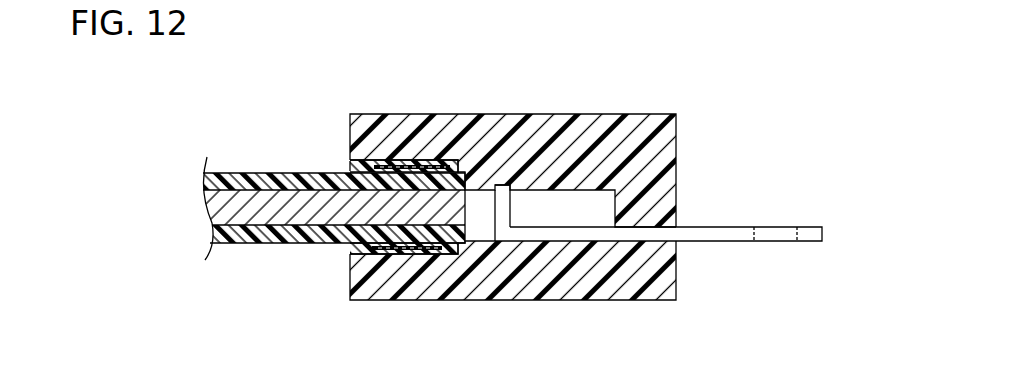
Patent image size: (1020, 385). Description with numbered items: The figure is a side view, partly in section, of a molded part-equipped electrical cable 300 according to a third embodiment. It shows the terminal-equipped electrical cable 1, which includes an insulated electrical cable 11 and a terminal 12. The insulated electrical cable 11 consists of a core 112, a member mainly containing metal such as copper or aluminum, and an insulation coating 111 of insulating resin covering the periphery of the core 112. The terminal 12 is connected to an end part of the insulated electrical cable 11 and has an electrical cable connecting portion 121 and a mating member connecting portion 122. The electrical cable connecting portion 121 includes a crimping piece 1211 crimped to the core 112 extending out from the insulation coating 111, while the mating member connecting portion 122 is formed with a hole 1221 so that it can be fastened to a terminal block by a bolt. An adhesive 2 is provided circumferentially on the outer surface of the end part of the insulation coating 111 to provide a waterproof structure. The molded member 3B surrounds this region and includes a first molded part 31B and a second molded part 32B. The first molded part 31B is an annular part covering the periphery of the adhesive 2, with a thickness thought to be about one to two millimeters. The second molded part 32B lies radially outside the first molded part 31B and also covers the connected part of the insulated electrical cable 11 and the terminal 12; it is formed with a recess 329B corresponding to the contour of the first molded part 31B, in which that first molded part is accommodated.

The molded part-equipped electrical cable 300 is at (741, 52).
The molded member 3B is at (645, 92).
The terminal-equipped electrical cable 1 is at (194, 232).
The insulated electrical cable 11 is at (240, 165).
The insulation coating 111 is at (245, 244).
The core 112 is at (317, 214).
The adhesive 2 is at (428, 164).
The recess 329B is at (348, 165).
The first molded part 31B is at (380, 256).
The second molded part 32B is at (460, 292).
The terminal 12 is at (834, 240).
The electrical cable connecting portion 121 is at (588, 240).
The crimping piece 1211 is at (504, 210).
The mating member connecting portion 122 is at (727, 236).
The hole 1221 is at (787, 227).